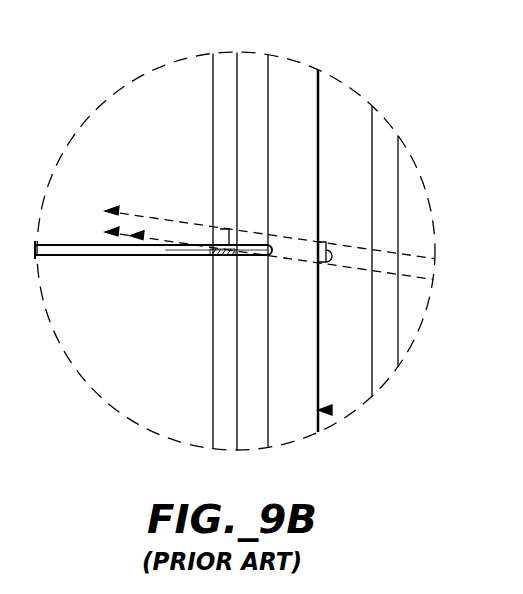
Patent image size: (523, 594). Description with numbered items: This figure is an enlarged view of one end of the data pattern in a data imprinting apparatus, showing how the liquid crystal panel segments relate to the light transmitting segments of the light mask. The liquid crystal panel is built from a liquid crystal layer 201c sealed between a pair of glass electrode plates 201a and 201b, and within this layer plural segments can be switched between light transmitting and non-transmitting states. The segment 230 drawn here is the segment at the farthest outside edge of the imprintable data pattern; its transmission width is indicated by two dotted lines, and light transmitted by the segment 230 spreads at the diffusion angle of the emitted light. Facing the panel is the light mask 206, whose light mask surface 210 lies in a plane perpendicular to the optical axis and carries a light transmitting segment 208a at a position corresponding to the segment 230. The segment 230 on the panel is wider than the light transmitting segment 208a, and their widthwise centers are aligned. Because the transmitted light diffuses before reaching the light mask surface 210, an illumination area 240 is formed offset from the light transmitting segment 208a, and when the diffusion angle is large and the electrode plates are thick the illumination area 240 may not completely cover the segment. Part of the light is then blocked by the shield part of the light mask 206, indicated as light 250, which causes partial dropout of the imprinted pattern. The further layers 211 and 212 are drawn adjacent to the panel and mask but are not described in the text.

The glass electrode plate 201a is at (293, 432).
The glass electrode plate 201b is at (352, 400).
The liquid crystal layer 201c is at (332, 410).
The light mask 206 is at (231, 446).
The light transmitting segment 208a is at (270, 258).
The light mask surface 210 is at (238, 335).
The layer 211 is at (252, 440).
The layer 212 is at (388, 370).
The segment 230 is at (326, 262).
The illumination area 240 is at (220, 229).
The light 250 is at (222, 258).